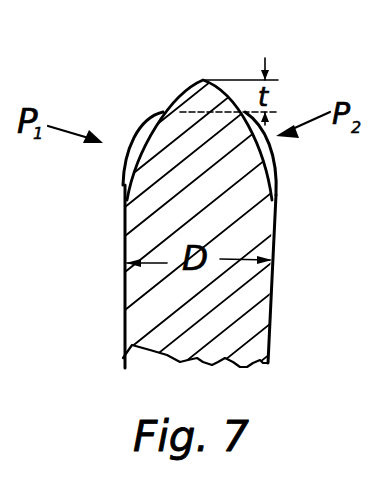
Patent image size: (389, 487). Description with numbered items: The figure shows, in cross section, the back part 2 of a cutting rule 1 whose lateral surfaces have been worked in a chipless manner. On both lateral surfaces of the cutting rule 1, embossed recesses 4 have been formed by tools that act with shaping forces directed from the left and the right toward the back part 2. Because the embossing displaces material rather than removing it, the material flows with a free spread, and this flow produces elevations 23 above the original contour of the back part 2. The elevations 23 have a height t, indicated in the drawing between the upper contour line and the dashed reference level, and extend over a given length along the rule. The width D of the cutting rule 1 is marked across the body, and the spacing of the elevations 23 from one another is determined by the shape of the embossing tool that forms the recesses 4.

The cutting rule 1 is at (160, 298).
The back part 2 is at (192, 137).
The embossed recesses 4 is at (148, 147).
The elevations 23 is at (197, 100).